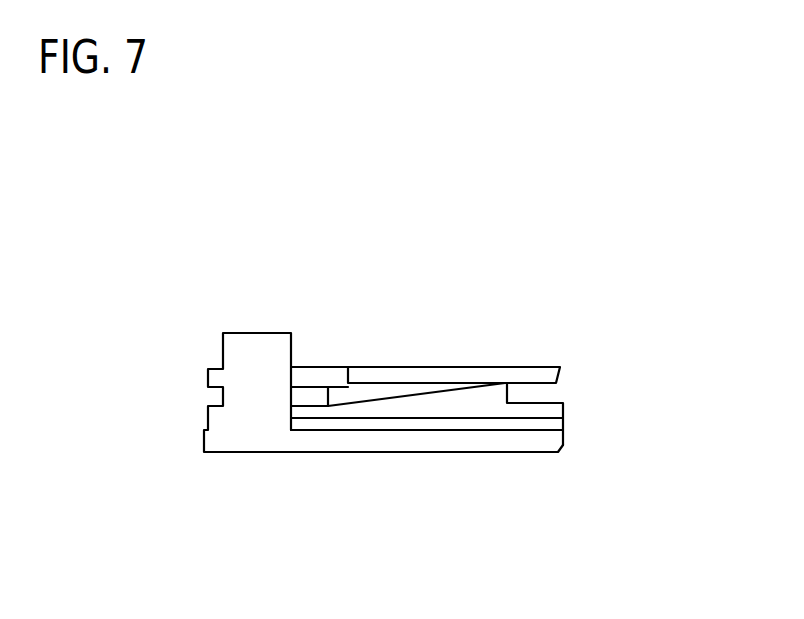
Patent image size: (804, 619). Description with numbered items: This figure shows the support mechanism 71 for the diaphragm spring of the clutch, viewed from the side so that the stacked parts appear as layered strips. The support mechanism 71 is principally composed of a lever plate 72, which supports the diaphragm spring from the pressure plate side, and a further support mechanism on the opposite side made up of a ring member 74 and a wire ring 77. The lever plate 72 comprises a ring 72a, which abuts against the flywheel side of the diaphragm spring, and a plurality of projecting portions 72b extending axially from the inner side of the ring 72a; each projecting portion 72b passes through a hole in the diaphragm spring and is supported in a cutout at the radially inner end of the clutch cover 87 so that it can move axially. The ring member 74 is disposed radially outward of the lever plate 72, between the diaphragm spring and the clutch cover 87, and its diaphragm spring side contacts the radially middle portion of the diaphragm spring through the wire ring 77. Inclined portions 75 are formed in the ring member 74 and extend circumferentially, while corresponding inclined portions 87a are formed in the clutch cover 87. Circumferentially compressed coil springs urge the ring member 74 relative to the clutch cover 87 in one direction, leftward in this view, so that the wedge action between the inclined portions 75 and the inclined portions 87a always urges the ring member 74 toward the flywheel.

The support mechanism 71 is at (152, 317).
The lever plate 72 is at (257, 453).
The ring 72a is at (405, 443).
The projecting portion 72b is at (257, 370).
The ring member 74 is at (550, 403).
The inclined portion 75 is at (482, 398).
The wire ring 77 is at (347, 454).
The clutch cover 87 is at (320, 379).
The inclined portion 87a is at (402, 390).